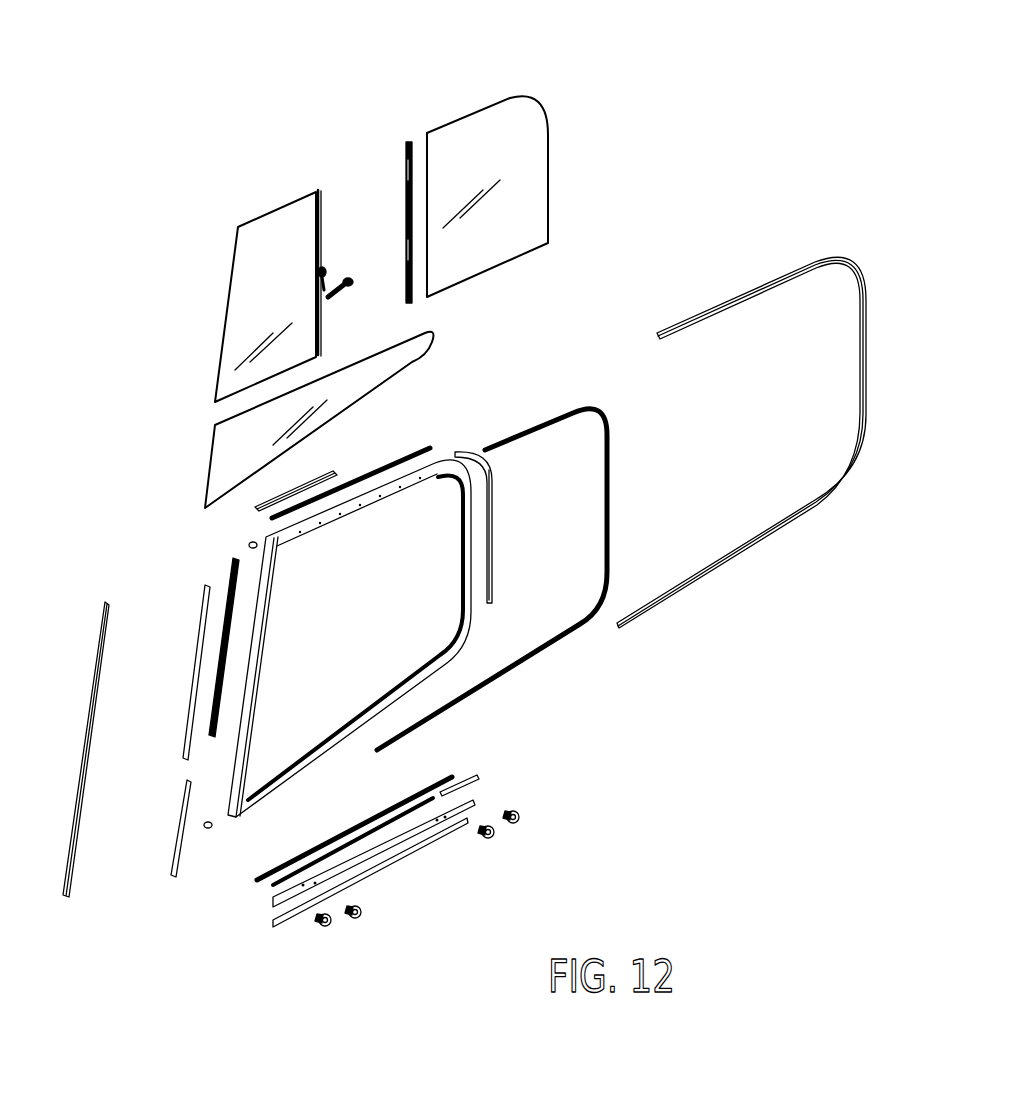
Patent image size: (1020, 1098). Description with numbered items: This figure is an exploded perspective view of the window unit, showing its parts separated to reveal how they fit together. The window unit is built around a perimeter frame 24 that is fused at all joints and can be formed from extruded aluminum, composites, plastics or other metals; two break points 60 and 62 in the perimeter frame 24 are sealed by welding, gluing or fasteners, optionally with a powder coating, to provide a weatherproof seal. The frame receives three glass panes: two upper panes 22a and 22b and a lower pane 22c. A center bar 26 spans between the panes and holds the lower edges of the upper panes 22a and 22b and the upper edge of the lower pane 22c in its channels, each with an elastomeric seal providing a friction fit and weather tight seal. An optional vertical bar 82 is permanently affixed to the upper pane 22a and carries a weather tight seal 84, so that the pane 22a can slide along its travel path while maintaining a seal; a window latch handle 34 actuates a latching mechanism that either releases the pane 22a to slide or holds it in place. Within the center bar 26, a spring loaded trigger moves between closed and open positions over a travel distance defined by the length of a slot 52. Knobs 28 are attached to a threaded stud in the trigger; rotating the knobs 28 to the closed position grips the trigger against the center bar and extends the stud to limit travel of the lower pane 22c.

The upper pane 22a is at (250, 340).
The upper pane 22b is at (502, 117).
The lower pane 22c is at (400, 372).
The vertical bar 82 is at (313, 328).
The window latch handle 34 is at (328, 287).
The weather tight seal 84 is at (407, 185).
The break point 60 is at (250, 540).
The perimeter frame 24 is at (467, 614).
The break point 62 is at (227, 817).
The center bar 26 is at (463, 755).
The slot 52 is at (303, 887).
The knob 28 is at (328, 928).